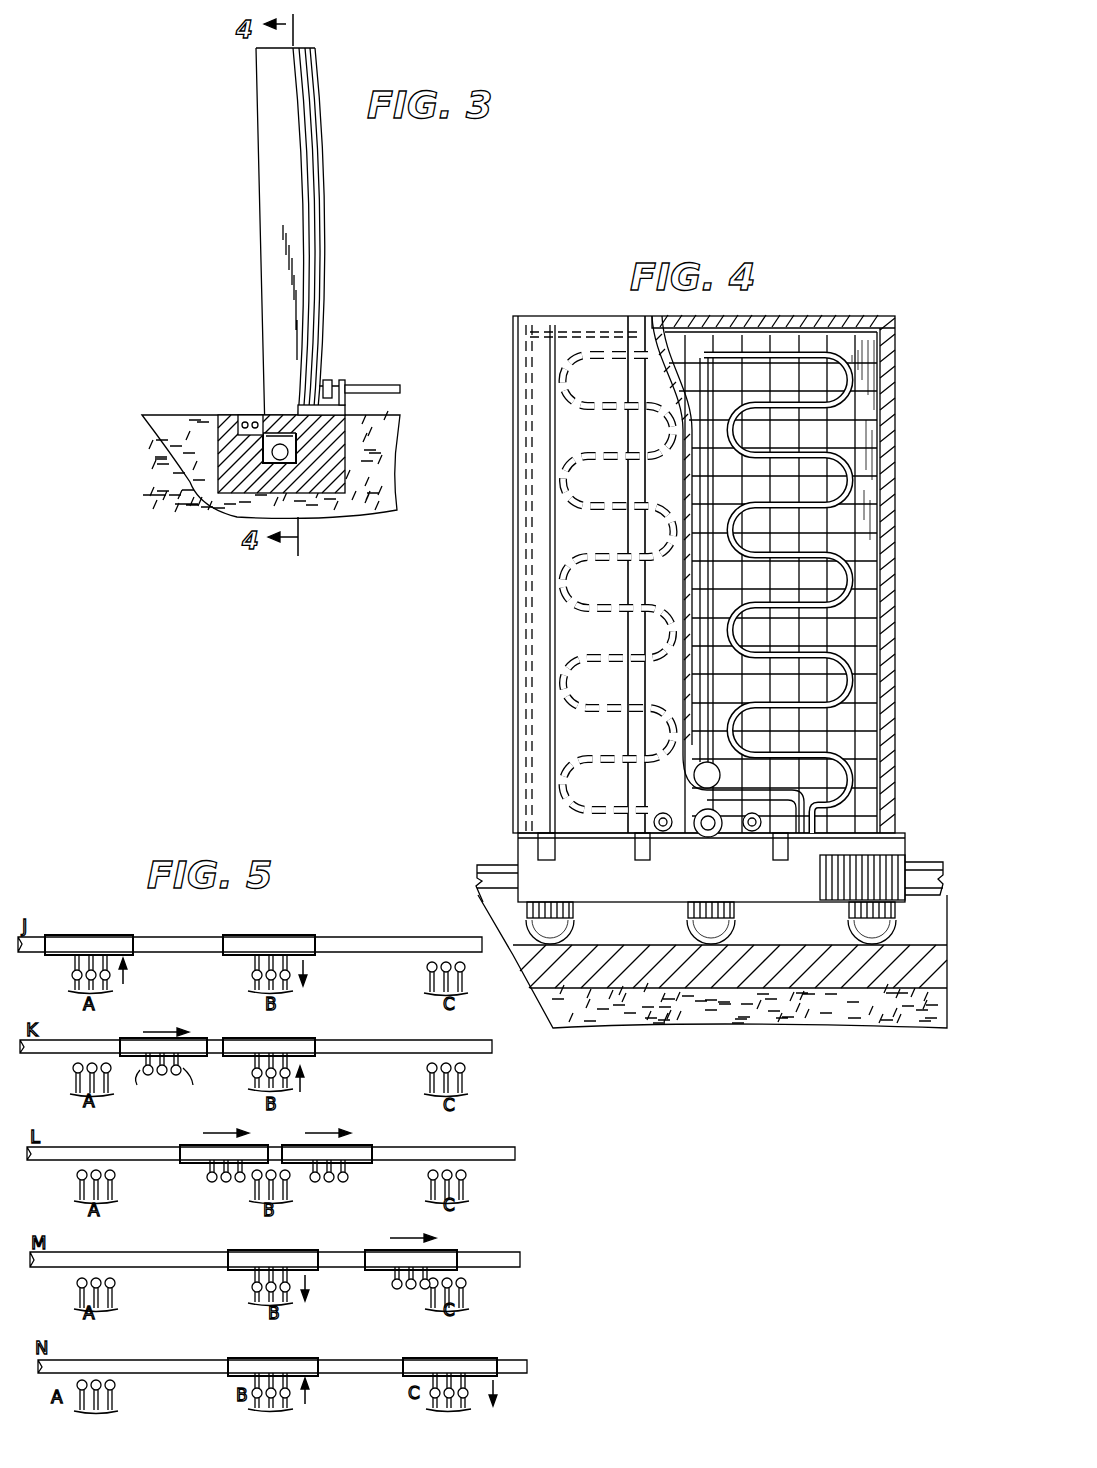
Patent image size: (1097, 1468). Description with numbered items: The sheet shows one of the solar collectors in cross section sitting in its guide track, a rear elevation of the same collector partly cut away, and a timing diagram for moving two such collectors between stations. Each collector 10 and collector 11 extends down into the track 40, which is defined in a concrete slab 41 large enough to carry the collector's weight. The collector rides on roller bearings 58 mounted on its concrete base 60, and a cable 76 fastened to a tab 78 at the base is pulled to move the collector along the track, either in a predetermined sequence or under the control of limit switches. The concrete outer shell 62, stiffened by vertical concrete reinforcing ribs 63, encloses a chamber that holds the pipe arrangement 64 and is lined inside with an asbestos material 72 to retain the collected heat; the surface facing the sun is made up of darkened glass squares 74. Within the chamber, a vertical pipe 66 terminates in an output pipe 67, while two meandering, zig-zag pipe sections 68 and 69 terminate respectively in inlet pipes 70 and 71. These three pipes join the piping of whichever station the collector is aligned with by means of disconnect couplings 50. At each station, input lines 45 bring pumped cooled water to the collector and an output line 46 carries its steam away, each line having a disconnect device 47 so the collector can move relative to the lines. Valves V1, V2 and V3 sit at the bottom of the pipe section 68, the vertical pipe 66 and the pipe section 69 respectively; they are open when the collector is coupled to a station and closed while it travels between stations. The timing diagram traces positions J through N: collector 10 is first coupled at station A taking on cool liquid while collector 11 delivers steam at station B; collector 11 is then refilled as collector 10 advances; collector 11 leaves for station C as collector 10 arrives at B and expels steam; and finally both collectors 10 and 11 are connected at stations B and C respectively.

In FIG. 5, the collector 10 is at (108, 935).
In FIG. 3, the collector 11 is at (283, 203).
In FIG. 5, the collector 11 is at (298, 935).
In FIG. 3, the track 40 is at (300, 457).
In FIG. 4, the track 40 is at (510, 910).
In FIG. 3, the concrete slab 41 is at (340, 468).
In FIG. 4, the concrete slab 41 is at (635, 970).
In FIG. 3, the input lines 45 is at (370, 388).
In FIG. 5, the input lines 45 is at (428, 1178).
In FIG. 3, the output line 46 is at (325, 379).
In FIG. 5, the output line 46 is at (72, 1072).
In FIG. 3, the disconnect device 47 is at (335, 382).
In FIG. 5, the disconnect couplings 50 is at (72, 972).
In FIG. 3, the roller bearings 58 is at (268, 433).
In FIG. 4, the roller bearings 58 is at (555, 930).
In FIG. 4, the base 60 is at (782, 883).
In FIG. 4, the outer shell 62 is at (877, 392).
In FIG. 4, the vertical concrete reinforcing ribs 63 is at (547, 653).
In FIG. 4, the pipe arrangement 64 is at (760, 332).
In FIG. 4, the vertical pipe 66 is at (683, 537).
In FIG. 4, the output pipe 67 is at (697, 838).
In FIG. 5, the output pipe 67 is at (225, 1178).
In FIG. 4, the meandering pipe section 68 is at (567, 618).
In FIG. 4, the meandering pipe section 69 is at (817, 567).
In FIG. 4, the inlet pipe 70 is at (662, 832).
In FIG. 5, the inlet pipe 70 is at (143, 1077).
In FIG. 4, the inlet pipe 71 is at (750, 832).
In FIG. 5, the inlet pipe 71 is at (187, 1078).
In FIG. 4, the asbestos material 72 is at (877, 563).
In FIG. 4, the glass squares 74 is at (868, 520).
In FIG. 4, the cable 76 is at (485, 877).
In FIG. 3, the tab 78 is at (258, 415).
In FIG. 4, the valve V1 is at (568, 798).
In FIG. 4, the valve V2 is at (907, 797).
In FIG. 4, the valve V3 is at (707, 573).